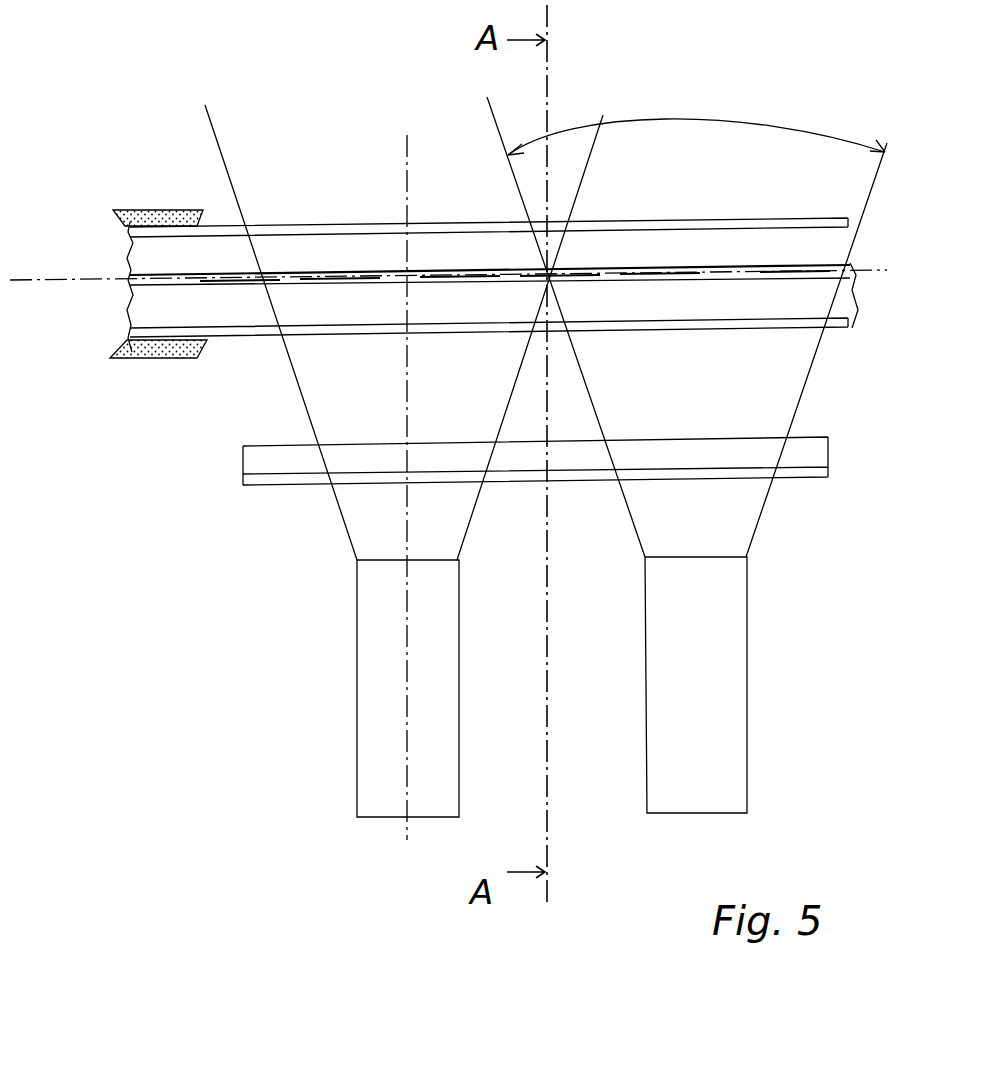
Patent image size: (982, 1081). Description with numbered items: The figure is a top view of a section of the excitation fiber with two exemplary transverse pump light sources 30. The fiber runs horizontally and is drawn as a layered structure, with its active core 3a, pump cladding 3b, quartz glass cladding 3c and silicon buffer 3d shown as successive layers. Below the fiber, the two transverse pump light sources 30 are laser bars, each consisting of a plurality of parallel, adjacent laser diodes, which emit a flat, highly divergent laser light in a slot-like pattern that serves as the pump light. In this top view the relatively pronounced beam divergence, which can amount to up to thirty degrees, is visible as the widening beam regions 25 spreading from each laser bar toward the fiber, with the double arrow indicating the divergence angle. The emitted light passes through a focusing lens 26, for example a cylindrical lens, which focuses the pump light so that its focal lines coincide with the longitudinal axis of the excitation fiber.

The active core 3a is at (138, 278).
The pump cladding 3b is at (168, 322).
The quartz glass cladding 3c is at (197, 342).
The silicon buffer 3d is at (152, 356).
The funnel 25 is at (353, 407).
The focusing lens 26 is at (810, 449).
The transverse pump light source 30 is at (386, 694).